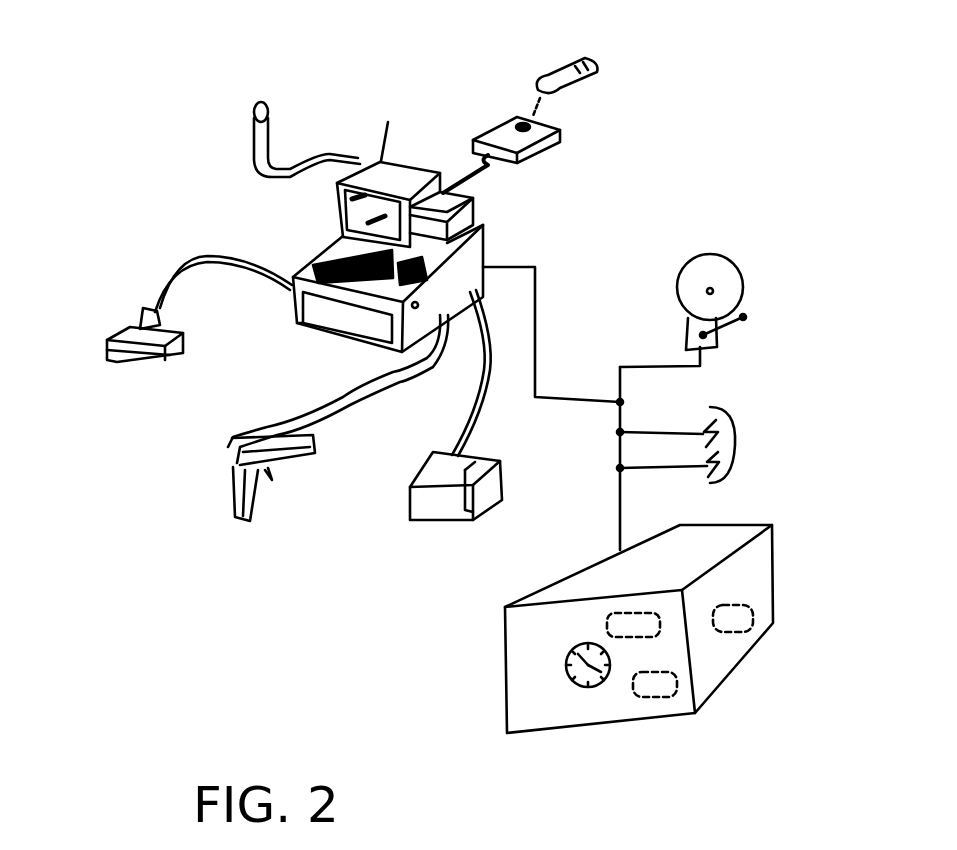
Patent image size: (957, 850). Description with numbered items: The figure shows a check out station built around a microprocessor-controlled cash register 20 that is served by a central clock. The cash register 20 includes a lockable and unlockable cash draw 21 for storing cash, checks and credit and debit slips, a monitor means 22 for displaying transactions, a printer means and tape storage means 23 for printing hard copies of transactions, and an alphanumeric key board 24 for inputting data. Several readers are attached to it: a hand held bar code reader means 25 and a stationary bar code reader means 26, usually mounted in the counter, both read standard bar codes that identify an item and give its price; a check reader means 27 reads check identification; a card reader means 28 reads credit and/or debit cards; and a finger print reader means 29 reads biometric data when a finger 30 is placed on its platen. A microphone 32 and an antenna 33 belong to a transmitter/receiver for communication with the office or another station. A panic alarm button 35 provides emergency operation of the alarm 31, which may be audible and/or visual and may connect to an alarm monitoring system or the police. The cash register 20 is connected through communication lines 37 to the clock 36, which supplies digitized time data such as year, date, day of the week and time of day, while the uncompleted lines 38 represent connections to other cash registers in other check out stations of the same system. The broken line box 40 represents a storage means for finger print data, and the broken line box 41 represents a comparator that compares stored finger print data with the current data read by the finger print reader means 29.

The cash register 20 is at (313, 340).
The cash draw 21 is at (287, 307).
The monitor means 22 is at (337, 212).
The printer means and tape storage means 23 is at (470, 193).
The alphanumeric key board 24 is at (318, 248).
The hand held bar code reader means 25 is at (267, 492).
The stationary bar code reader means 26 is at (113, 327).
The check reader means 27 is at (483, 223).
The card reader means 28 is at (503, 467).
The finger print reader means 29 is at (490, 133).
The finger 30 is at (557, 72).
The alarm 31 is at (747, 272).
The microphone 32 is at (252, 143).
The antenna 33 is at (380, 150).
The panic alarm button 35 is at (400, 350).
The clock 36 is at (558, 670).
The communication lines 37 is at (567, 390).
The uncompleted lines 38 is at (700, 445).
The storage means 40 is at (757, 607).
The comparator 41 is at (677, 680).